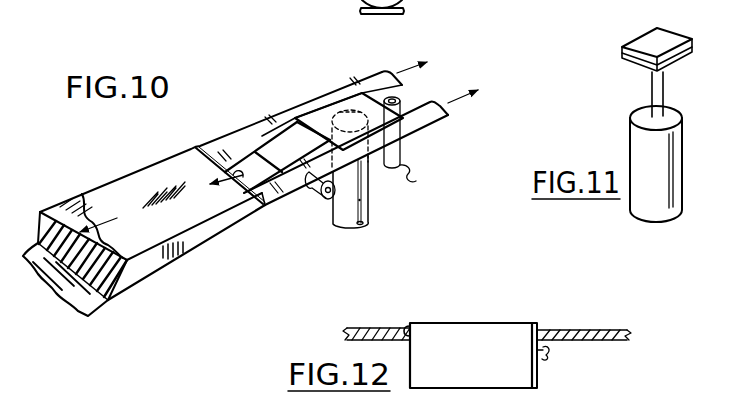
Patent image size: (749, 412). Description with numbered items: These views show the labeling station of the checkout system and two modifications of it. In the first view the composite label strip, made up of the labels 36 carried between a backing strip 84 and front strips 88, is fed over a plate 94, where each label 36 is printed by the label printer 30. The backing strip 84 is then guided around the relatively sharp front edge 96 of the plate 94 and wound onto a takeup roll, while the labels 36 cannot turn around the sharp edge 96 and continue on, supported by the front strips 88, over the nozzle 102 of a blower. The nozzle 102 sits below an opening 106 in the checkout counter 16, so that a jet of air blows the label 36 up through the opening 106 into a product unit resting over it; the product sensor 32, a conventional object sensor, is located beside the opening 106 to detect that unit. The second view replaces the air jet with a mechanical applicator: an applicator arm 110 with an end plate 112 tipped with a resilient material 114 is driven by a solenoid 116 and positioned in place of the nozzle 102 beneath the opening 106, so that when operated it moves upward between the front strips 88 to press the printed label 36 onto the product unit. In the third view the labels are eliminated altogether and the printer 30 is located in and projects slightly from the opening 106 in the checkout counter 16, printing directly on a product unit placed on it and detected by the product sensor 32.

In FIG. 10, the backing strip 84 is at (123, 187).
In FIG. 10, the plate 94 is at (130, 273).
In FIG. 10, the front edge 96 is at (265, 206).
In FIG. 10, the front strips 88 is at (272, 120).
In FIG. 10, the product sensor 32 is at (403, 102).
In FIG. 12, the product sensor 32 is at (537, 325).
In FIG. 10, the label 36 is at (328, 112).
In FIG. 10, the nozzle 102 is at (349, 110).
In FIG. 11, the solenoid 116 is at (635, 145).
In FIG. 11, the applicator arm 110 is at (665, 97).
In FIG. 11, the resilient material 114 is at (675, 35).
In FIG. 11, the end plate 112 is at (682, 58).
In FIG. 12, the label printer 30 is at (470, 323).
In FIG. 12, the checkout counter 16 is at (362, 328).
In FIG. 12, the opening 106 is at (411, 325).